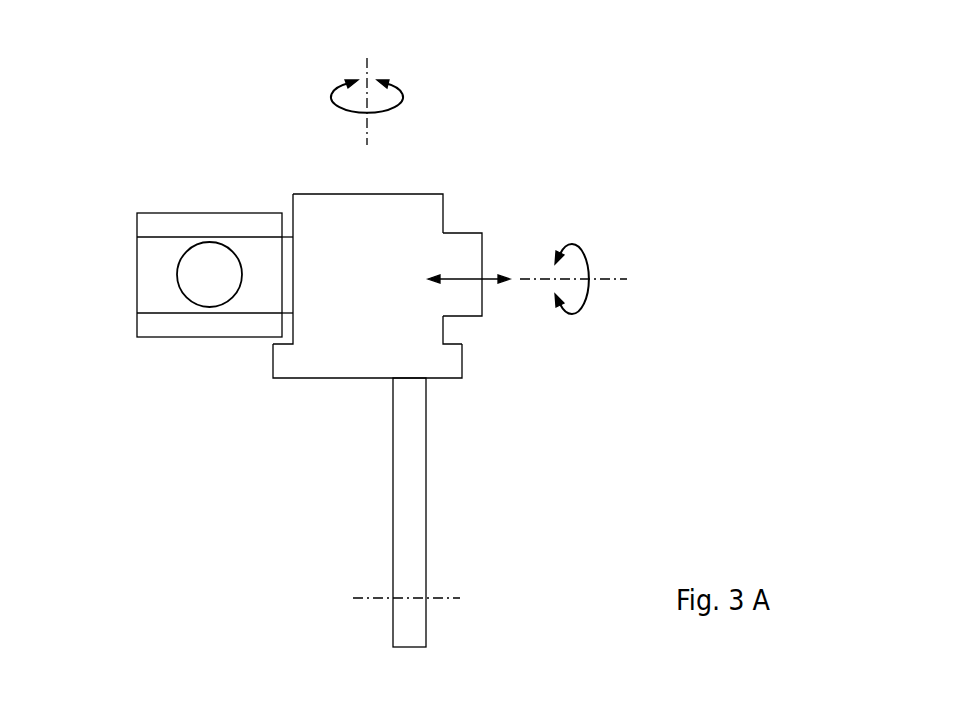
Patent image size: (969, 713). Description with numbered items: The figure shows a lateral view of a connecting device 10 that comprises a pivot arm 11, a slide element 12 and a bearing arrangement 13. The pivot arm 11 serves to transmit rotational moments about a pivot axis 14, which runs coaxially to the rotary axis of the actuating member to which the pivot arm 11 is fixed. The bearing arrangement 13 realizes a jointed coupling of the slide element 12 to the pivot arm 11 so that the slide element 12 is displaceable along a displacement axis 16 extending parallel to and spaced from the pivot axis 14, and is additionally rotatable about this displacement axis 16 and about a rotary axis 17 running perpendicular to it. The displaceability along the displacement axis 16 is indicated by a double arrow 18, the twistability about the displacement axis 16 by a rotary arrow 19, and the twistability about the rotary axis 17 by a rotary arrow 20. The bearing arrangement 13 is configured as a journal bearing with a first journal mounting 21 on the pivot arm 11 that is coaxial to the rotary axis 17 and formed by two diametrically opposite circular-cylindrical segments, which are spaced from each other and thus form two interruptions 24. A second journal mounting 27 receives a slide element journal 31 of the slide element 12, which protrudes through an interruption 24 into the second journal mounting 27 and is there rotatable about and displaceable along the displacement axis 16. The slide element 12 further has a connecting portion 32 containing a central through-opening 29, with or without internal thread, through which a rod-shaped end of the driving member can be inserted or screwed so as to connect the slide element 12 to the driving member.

The connecting device 10 is at (650, 145).
The pivot arm 11 is at (410, 477).
The slide element 12 is at (137, 275).
The bearing arrangement 13 is at (415, 163).
The pivot axis 14 is at (460, 598).
The displacement axis 16 is at (607, 273).
The rotary axis 17 is at (367, 137).
The double arrow 18 is at (470, 277).
The rotary arrow 19 is at (578, 242).
The rotary arrow 20 is at (332, 97).
The first journal mounting 21 is at (443, 213).
The interruption 24 is at (452, 328).
The second journal mounting 27 is at (292, 277).
The through-opening 29 is at (196, 287).
The slide element journal 31 is at (468, 298).
The connecting portion 32 is at (168, 220).